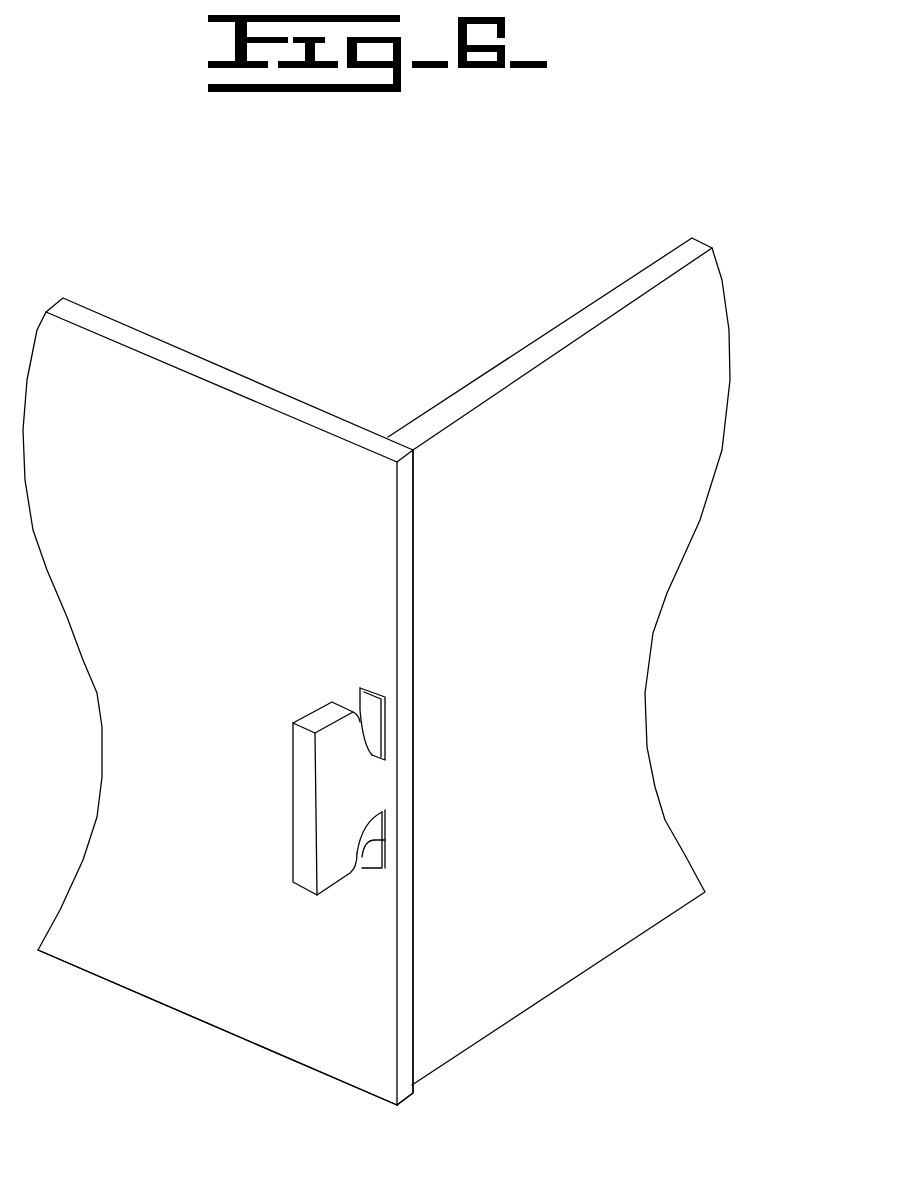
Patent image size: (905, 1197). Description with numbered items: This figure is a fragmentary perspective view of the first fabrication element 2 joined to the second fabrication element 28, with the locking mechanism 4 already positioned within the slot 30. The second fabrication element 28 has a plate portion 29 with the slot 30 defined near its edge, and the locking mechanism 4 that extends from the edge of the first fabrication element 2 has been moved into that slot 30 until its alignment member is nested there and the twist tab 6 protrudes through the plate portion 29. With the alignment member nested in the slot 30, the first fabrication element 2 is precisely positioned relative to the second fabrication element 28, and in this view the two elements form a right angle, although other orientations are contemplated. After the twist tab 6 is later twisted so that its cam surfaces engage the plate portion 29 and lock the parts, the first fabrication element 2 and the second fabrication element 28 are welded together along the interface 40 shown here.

The first fabrication element 2 is at (603, 200).
The second fabrication element 28 is at (167, 274).
The plate portion 29 is at (152, 953).
The locking mechanism 4 is at (377, 778).
The twist tab 6 is at (342, 768).
The slot 30 is at (362, 850).
The interface 40 is at (413, 983).